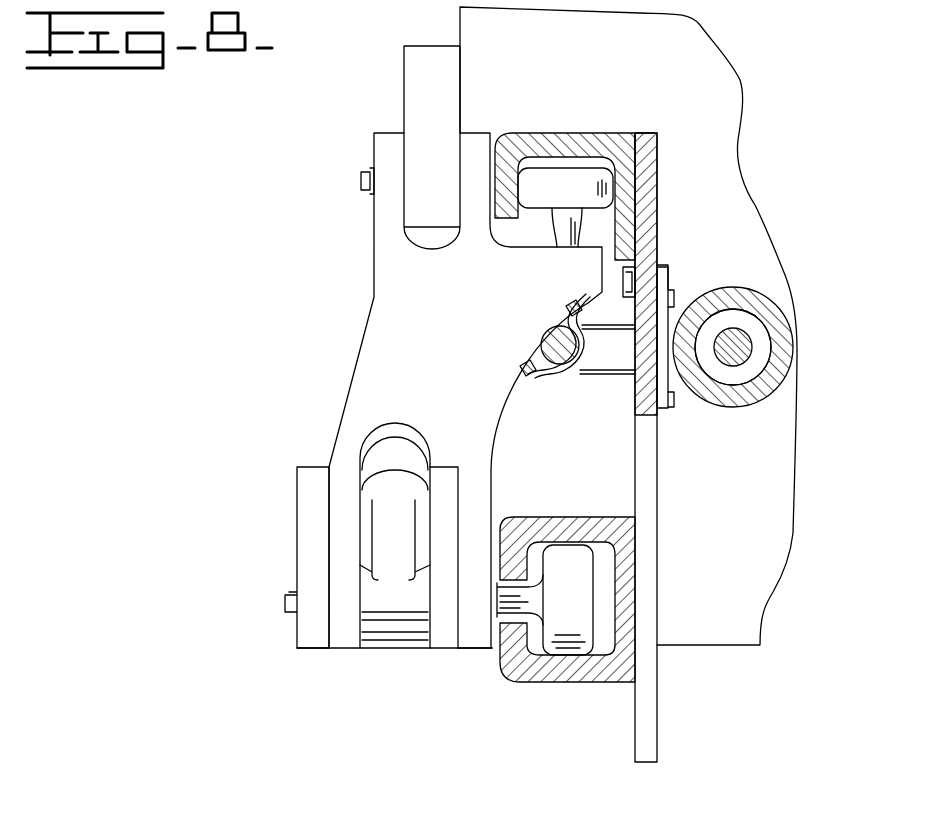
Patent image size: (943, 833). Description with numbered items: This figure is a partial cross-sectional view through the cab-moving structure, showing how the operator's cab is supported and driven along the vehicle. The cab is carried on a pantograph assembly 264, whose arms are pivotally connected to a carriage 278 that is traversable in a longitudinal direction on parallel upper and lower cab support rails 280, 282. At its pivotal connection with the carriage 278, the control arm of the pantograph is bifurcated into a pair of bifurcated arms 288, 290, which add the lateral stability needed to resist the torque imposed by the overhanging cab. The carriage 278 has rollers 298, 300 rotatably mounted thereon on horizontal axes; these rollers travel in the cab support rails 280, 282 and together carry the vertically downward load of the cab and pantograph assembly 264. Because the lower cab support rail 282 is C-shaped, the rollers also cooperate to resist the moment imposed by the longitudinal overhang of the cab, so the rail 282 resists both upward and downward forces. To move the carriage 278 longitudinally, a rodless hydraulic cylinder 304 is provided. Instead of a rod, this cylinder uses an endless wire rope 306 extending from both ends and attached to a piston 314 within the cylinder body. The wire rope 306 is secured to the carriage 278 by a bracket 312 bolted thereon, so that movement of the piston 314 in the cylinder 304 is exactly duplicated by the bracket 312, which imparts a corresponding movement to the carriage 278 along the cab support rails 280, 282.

The pantograph assembly 264 is at (435, 22).
The carriage 278 is at (378, 336).
The upper cab support rail 280 is at (600, 136).
The lower cab support rail 282 is at (530, 668).
The bifurcated arm 288 is at (318, 645).
The bifurcated arm 290 is at (446, 645).
The roller 298 is at (552, 168).
The roller 300 is at (568, 562).
The rodless hydraulic cylinder 304 is at (780, 300).
The wire rope 306 is at (558, 352).
The bracket 312 is at (568, 368).
The piston 314 is at (722, 322).